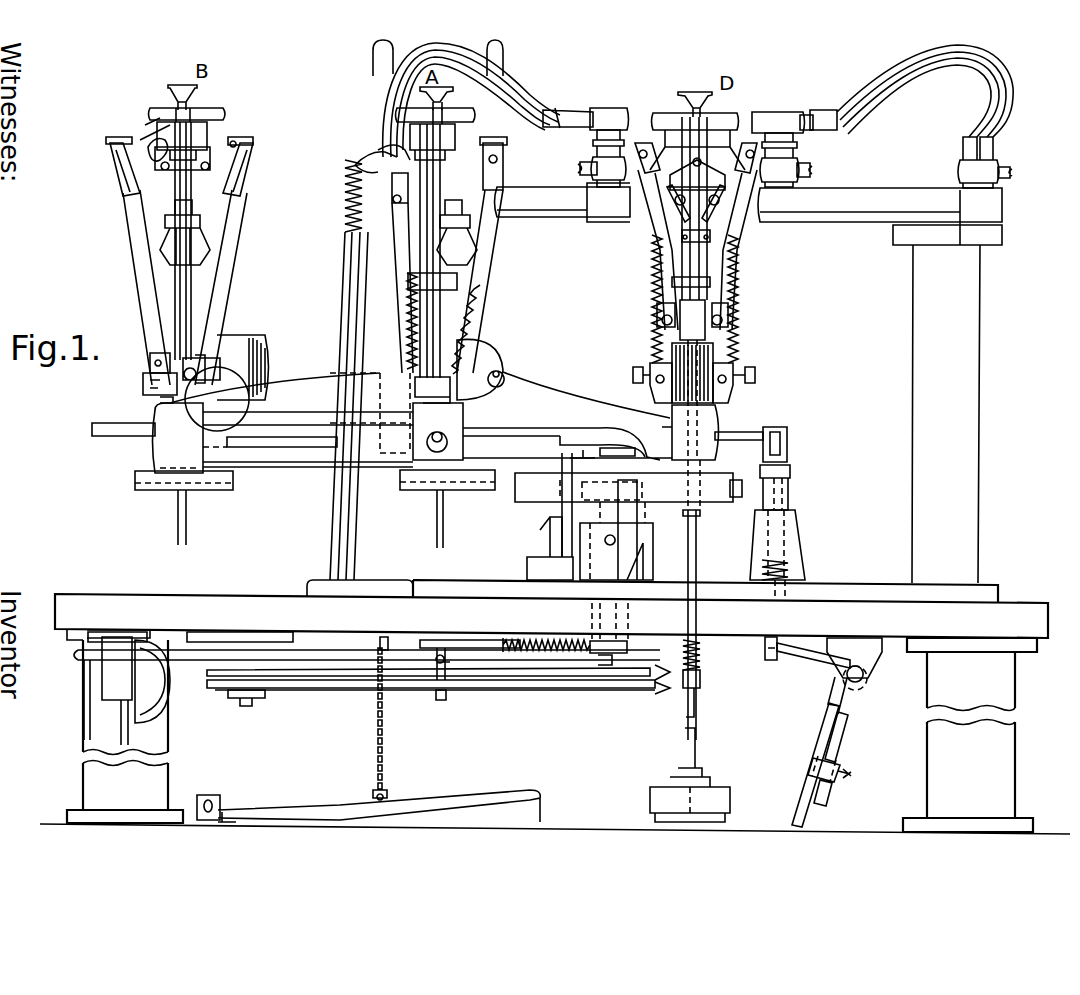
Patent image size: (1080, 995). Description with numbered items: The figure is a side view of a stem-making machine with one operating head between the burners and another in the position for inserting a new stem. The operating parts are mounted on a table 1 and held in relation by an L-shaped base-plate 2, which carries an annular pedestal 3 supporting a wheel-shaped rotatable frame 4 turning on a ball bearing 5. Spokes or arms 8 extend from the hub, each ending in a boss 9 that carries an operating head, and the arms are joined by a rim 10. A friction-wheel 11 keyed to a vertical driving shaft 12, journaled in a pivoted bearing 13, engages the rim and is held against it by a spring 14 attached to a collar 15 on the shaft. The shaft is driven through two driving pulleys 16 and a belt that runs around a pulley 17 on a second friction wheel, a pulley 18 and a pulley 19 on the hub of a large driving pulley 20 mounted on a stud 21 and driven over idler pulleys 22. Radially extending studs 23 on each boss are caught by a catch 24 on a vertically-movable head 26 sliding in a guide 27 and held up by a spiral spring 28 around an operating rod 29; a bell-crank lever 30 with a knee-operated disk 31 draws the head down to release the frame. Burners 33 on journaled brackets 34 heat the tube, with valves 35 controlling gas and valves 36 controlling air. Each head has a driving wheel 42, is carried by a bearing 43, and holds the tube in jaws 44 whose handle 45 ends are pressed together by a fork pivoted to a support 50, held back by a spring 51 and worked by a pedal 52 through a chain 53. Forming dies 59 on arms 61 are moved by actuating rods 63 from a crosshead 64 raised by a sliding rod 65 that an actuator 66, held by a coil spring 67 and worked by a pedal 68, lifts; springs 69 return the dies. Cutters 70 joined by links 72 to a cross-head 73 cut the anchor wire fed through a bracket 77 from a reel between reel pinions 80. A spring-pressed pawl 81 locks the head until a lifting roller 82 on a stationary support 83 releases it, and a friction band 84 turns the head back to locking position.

The table 1 is at (1022, 606).
The L-shaped base-plate 2 is at (990, 590).
The annular pedestal 3 is at (518, 508).
The rotatable frame 4 is at (550, 400).
The ball bearing 5 is at (497, 480).
The spokes or arms 8 is at (318, 385).
The boss 9 is at (165, 450).
The rim 10 is at (305, 465).
The friction-wheel 11 is at (608, 430).
The vertical driving shaft 12 is at (622, 652).
The bearing 13 is at (640, 533).
The spring 14 is at (530, 652).
The collar 15 is at (636, 648).
The driving pulleys 16 is at (662, 676).
The pulley 17 is at (465, 670).
The pulley 18 is at (212, 674).
The pulley 19 is at (212, 689).
The large driving pulley 20 is at (305, 656).
The stud 21 is at (245, 706).
The idler pulleys 22 is at (130, 700).
The radially extending studs 23 is at (112, 423).
The catch 24 is at (740, 430).
The vertically-movable head 26 is at (789, 495).
The guide 27 is at (800, 540).
The spiral spring 28 is at (792, 568).
The operating rod 29 is at (769, 655).
The bell-crank lever 30 is at (860, 683).
The disk 31 is at (800, 790).
The burners 33 is at (701, 120).
The journaled brackets 34 is at (749, 383).
The valves 35 is at (695, 158).
The valves 36 is at (911, 116).
The driving wheel 42 is at (137, 481).
The bearing 43 is at (166, 396).
The jaws 44 is at (202, 112).
The handle 45 is at (146, 147).
The standard or support 50 is at (332, 530).
The spring 51 is at (345, 210).
The pedal 52 is at (472, 790).
The chain 53 is at (378, 725).
The forming dies 59 is at (118, 137).
The arms 61 is at (120, 158).
The actuating rods 63 is at (133, 240).
The crosshead 64 is at (148, 382).
The sliding rod 65 is at (176, 532).
The actuator 66 is at (694, 540).
The coil spring 67 is at (703, 660).
The pedal 68 is at (728, 800).
The springs 69 is at (407, 333).
The cutters 70 is at (190, 204).
The links 72 is at (678, 216).
The cross-head 73 is at (710, 233).
The bracket 77 is at (683, 277).
The reel pinions 80 is at (634, 368).
The spring-pressed pawl 81 is at (620, 446).
The lifting roller 82 is at (570, 446).
The stationary support 83 is at (560, 510).
The friction band 84 is at (710, 503).